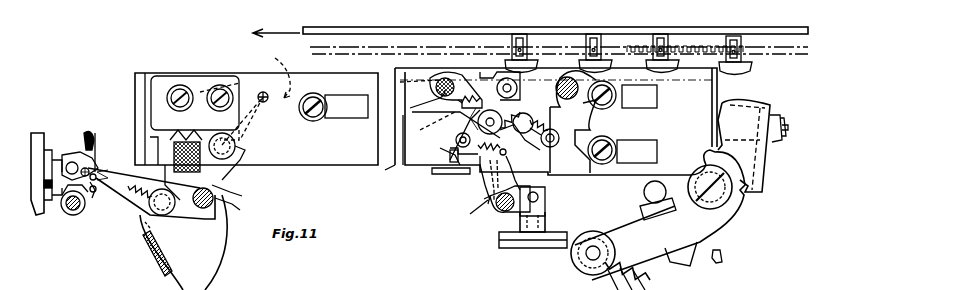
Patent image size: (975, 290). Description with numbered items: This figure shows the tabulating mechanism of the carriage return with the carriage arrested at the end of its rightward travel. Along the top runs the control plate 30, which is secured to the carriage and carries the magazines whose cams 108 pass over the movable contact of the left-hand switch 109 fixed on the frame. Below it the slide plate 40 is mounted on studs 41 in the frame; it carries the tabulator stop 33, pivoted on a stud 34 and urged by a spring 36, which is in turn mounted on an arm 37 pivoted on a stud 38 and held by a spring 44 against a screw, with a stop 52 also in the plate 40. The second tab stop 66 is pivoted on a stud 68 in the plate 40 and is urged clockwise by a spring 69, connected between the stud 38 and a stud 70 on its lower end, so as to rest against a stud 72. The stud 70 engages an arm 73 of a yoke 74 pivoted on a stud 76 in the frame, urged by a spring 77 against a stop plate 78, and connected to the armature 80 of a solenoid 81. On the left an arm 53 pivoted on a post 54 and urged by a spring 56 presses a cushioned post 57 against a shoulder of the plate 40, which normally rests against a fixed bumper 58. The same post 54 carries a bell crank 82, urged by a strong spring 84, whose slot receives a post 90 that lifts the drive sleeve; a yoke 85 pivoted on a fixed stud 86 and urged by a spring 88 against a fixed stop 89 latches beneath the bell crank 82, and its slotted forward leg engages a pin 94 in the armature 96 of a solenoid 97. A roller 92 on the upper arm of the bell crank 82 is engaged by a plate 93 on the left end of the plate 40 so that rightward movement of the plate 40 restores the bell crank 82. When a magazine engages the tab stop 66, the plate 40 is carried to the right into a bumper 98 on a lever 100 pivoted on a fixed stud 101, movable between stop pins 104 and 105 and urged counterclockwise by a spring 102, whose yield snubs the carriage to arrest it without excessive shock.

The control plate 30 is at (424, 26).
The tabulator stop 33 is at (450, 160).
The stud 34 is at (410, 108).
The spring 36 is at (430, 172).
The arm 37 is at (405, 125).
The stud 38 is at (498, 92).
The plate 40 is at (392, 168).
The studs 41 is at (318, 115).
The spring 44 is at (456, 125).
The stop 52 is at (625, 45).
The arm 53 is at (202, 258).
The post 54 is at (151, 222).
The spring 56 is at (245, 72).
The cushioned post 57 is at (183, 165).
The fixed bumper 58 is at (94, 130).
The second tab stop 66 is at (564, 100).
The stud 68 is at (637, 124).
The spring 69 is at (560, 140).
The stud 70 is at (552, 142).
The stud 72 is at (532, 115).
The arm 73 is at (527, 141).
The yoke 74 is at (469, 213).
The stud 76 is at (490, 210).
The spring 77 is at (480, 170).
The stop plate 78 is at (450, 165).
The armature 80 is at (548, 212).
The solenoid 81 is at (500, 243).
The bell crank 82 is at (238, 194).
The spring 84 is at (180, 102).
The yoke 85 is at (92, 205).
The fixed stud 86 is at (70, 216).
The spring 88 is at (97, 170).
The fixed stop 89 is at (93, 192).
The post 90 is at (236, 212).
The roller 92 is at (232, 172).
The plate 93 is at (172, 73).
The pin 94 is at (70, 155).
The armature 96 is at (57, 160).
The solenoid 97 is at (46, 215).
The bumper 98 is at (728, 105).
The lever 100 is at (742, 192).
The fixed stud 101 is at (718, 205).
The spring 102 is at (645, 280).
The stop pin 104 is at (722, 260).
The stop pin 105 is at (645, 200).
The cams 108 is at (555, 45).
The switch 109 is at (411, 83).